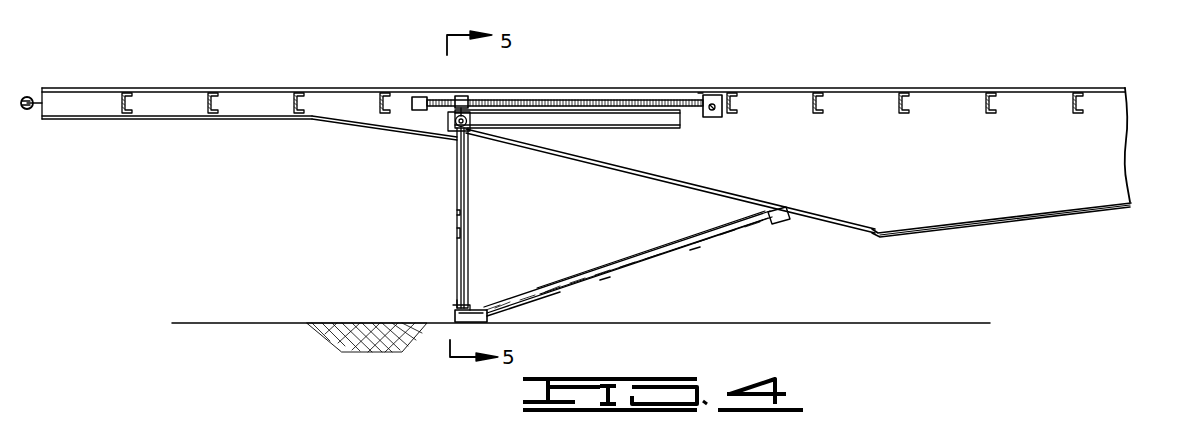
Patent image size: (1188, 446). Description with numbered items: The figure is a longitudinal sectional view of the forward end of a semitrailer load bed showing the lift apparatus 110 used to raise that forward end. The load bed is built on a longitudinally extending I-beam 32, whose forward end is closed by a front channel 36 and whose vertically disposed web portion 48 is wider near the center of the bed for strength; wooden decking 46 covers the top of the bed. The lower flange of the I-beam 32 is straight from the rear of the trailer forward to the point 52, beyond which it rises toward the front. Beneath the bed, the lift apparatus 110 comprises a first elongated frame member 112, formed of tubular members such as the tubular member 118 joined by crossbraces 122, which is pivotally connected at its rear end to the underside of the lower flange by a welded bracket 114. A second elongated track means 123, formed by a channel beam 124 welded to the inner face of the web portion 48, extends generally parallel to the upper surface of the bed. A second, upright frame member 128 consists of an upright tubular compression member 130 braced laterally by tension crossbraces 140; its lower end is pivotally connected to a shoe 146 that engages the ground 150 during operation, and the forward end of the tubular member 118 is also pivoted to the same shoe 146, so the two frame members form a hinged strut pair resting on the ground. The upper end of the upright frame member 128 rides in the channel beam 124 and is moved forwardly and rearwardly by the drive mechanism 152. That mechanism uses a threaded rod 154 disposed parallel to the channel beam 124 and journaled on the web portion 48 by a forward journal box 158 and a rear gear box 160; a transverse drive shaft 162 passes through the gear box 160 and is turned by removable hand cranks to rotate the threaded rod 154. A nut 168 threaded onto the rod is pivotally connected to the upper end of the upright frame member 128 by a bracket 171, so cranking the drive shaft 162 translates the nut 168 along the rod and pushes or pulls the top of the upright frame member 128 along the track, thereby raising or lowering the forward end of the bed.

The I-beam 32 is at (990, 204).
The front channel 36 is at (44, 120).
The decking 46 is at (950, 90).
The web portion 48 is at (1118, 112).
The point 52 is at (878, 236).
The lift apparatus 110 is at (440, 152).
The first elongated frame member 112 is at (654, 266).
The bracket 114 is at (768, 213).
The tubular member 118 is at (561, 291).
The crossbrace 122 is at (692, 242).
The second elongated track means 123 is at (556, 146).
The channel beam 124 is at (598, 126).
The second elongated upright frame member 128 is at (452, 233).
The upright tubular compression member 130 is at (468, 219).
The tension crossbrace 140 is at (457, 182).
The shoe 146 is at (452, 312).
The ground 150 is at (255, 322).
The drive mechanism 152 is at (700, 90).
The threaded rod 154 is at (524, 100).
The forward journal box 158 is at (420, 96).
The rear gear box 160 is at (713, 102).
The transverse drive shaft 162 is at (710, 118).
The nut 168 is at (461, 96).
The bracket 171 is at (452, 124).